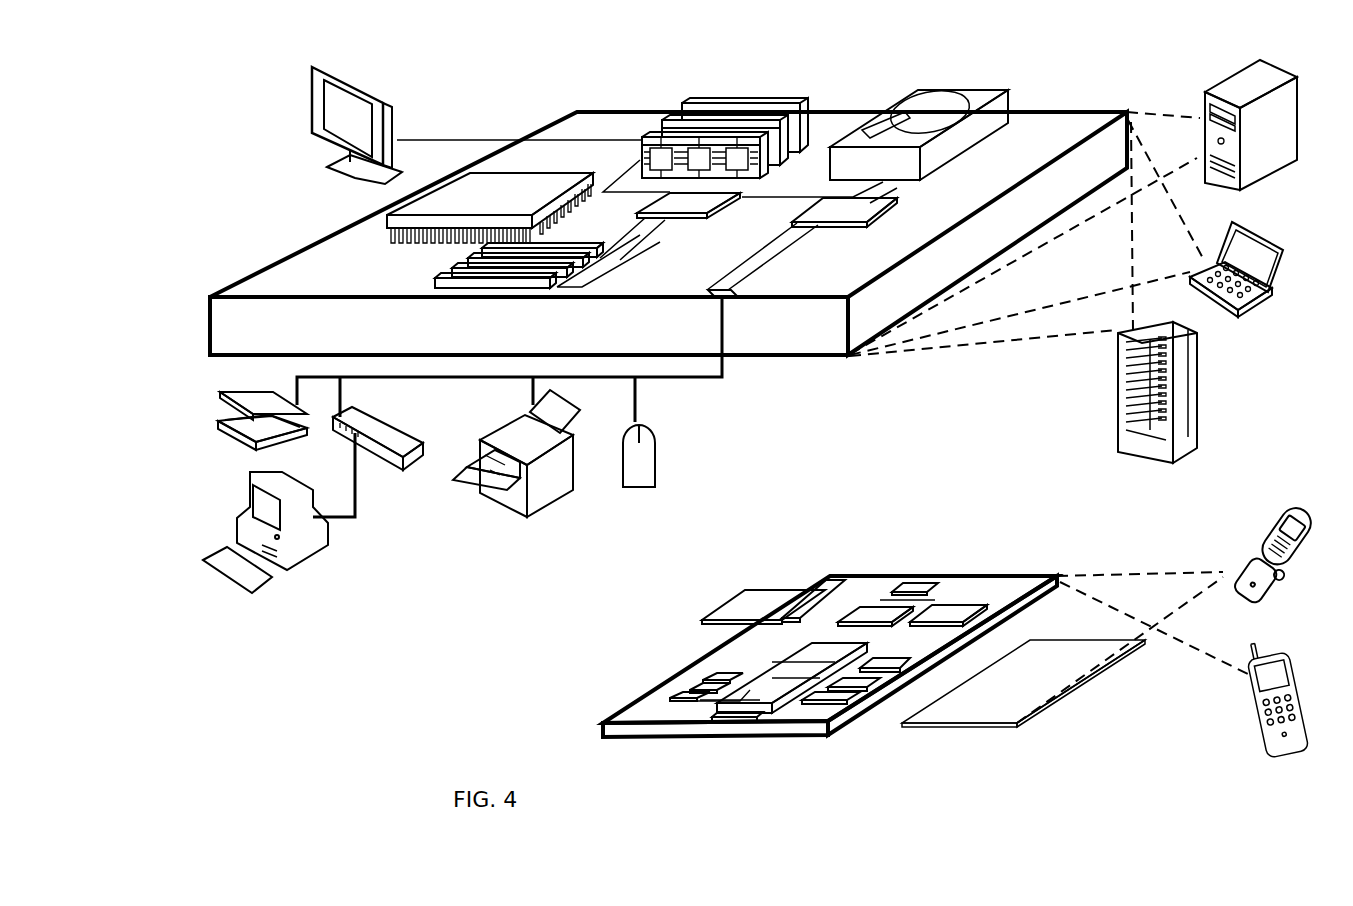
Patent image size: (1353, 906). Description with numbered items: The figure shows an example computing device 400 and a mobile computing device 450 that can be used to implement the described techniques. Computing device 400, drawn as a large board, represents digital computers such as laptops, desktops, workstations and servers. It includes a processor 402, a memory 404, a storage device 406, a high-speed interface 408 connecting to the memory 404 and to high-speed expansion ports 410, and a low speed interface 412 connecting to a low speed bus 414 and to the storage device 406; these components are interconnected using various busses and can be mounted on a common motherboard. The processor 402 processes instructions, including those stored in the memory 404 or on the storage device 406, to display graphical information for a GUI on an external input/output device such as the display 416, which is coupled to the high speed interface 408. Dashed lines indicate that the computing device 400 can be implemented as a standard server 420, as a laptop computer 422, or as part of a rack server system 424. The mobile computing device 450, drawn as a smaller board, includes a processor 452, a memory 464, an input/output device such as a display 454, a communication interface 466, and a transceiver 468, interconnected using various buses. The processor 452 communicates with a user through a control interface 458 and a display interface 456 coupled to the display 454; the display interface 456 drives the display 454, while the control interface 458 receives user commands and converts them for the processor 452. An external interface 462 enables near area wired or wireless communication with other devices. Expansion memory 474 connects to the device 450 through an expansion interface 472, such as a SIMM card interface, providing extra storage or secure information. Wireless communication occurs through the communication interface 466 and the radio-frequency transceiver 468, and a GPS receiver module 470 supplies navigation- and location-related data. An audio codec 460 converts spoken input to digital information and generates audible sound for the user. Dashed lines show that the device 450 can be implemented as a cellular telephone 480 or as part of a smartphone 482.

The computing device 400 is at (506, 82).
The processor 402 is at (353, 222).
The memory 404 is at (692, 105).
The storage device 406 is at (915, 95).
The high-speed interface 408 is at (648, 207).
The high-speed expansion ports 410 is at (452, 270).
The low speed interface 412 is at (848, 218).
The low speed bus 414 is at (731, 299).
The display 416 is at (312, 70).
The standard server 420 is at (1203, 98).
The laptop computer 422 is at (1231, 228).
The rack server system 424 is at (1118, 412).
The mobile computer device 450 is at (811, 552).
The processor 452 is at (760, 710).
The display 454 is at (1018, 724).
The display interface 456 is at (843, 706).
The control interface 458 is at (868, 690).
The audio codec 460 is at (890, 670).
The external interface 462 is at (733, 725).
The memory 464 is at (690, 692).
The communication interface 466 is at (878, 612).
The transceiver 468 is at (947, 610).
The GPS receiver module 470 is at (917, 584).
The expansion interface 472 is at (806, 592).
The expansion memory 474 is at (745, 590).
The cellular telephone 480 is at (1273, 524).
The smartphone 482 is at (1258, 651).